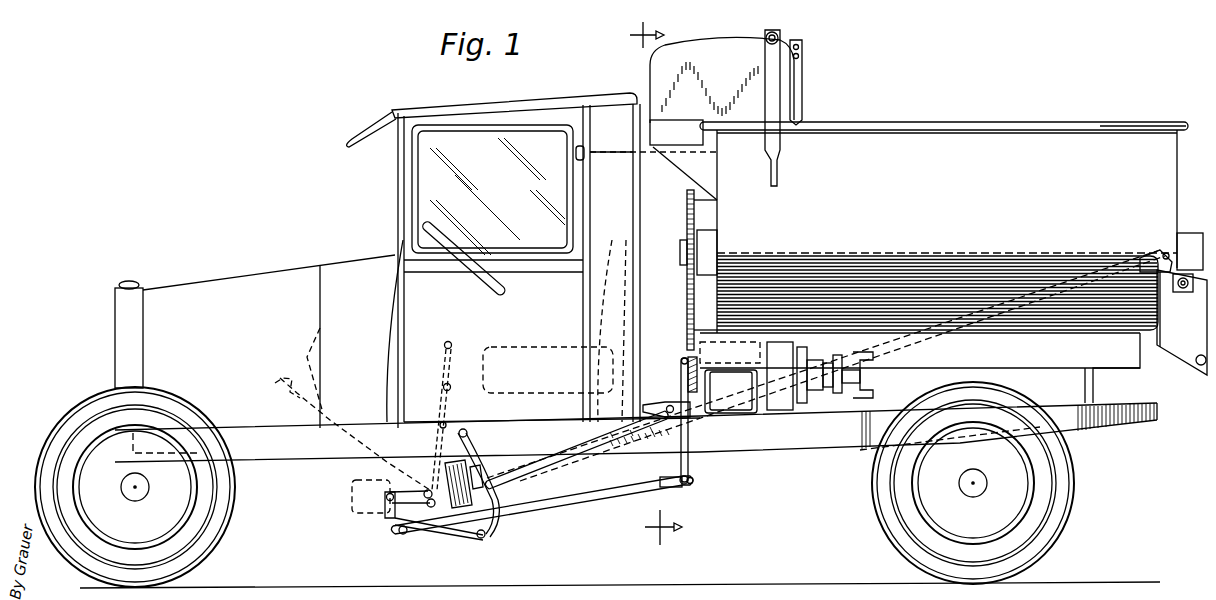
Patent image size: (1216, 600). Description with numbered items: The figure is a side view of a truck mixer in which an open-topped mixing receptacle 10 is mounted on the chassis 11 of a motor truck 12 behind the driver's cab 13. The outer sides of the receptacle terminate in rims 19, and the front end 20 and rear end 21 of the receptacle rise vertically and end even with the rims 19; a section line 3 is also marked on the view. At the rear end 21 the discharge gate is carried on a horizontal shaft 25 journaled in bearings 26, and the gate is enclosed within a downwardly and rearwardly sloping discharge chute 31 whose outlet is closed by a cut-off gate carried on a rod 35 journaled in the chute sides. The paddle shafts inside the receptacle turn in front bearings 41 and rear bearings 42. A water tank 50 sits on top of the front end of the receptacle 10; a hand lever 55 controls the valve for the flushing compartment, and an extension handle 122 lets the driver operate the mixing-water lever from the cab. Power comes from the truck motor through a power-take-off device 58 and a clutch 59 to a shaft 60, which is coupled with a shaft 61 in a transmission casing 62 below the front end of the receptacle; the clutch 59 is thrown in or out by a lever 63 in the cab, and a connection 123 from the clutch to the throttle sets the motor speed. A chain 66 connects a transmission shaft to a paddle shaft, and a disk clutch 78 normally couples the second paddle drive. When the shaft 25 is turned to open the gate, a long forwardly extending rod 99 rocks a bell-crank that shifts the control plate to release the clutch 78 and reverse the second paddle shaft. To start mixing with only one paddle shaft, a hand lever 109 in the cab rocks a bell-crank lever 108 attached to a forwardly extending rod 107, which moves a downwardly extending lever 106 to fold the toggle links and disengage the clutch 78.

The section line 3- 3 is at (656, 287).
The open-topped mixing receptacle 10 is at (1077, 148).
The chassis 11 is at (775, 452).
The motor truck 12 is at (248, 276).
The driver's cab 13 is at (536, 98).
The rims 19 is at (1150, 123).
The front end 20 is at (686, 197).
The rear end 21 is at (1178, 178).
The horizontal shaft 25 is at (1142, 262).
The bearings 26 is at (1183, 292).
The discharge chute 31 is at (1180, 342).
The rod 35 is at (1199, 368).
The front bearings 41 is at (708, 242).
The rear bearings 42 is at (1192, 240).
The tank 50 is at (710, 55).
The hand lever 55 is at (782, 62).
The power-take-off device 58 is at (384, 508).
The clutch 59 is at (441, 500).
The shaft 60 is at (576, 454).
The shaft 61 is at (700, 411).
The transmission casing 62 is at (748, 410).
The lever 63 is at (445, 360).
The chain 66 is at (686, 298).
The disk clutch 78 is at (805, 400).
The rod 99 is at (993, 334).
The lever 106 is at (683, 385).
The rod 107 is at (565, 505).
The bell-crank lever 108 is at (423, 490).
The hand lever 109 is at (450, 400).
The extension handle 122 is at (605, 152).
The connection 123 is at (336, 402).